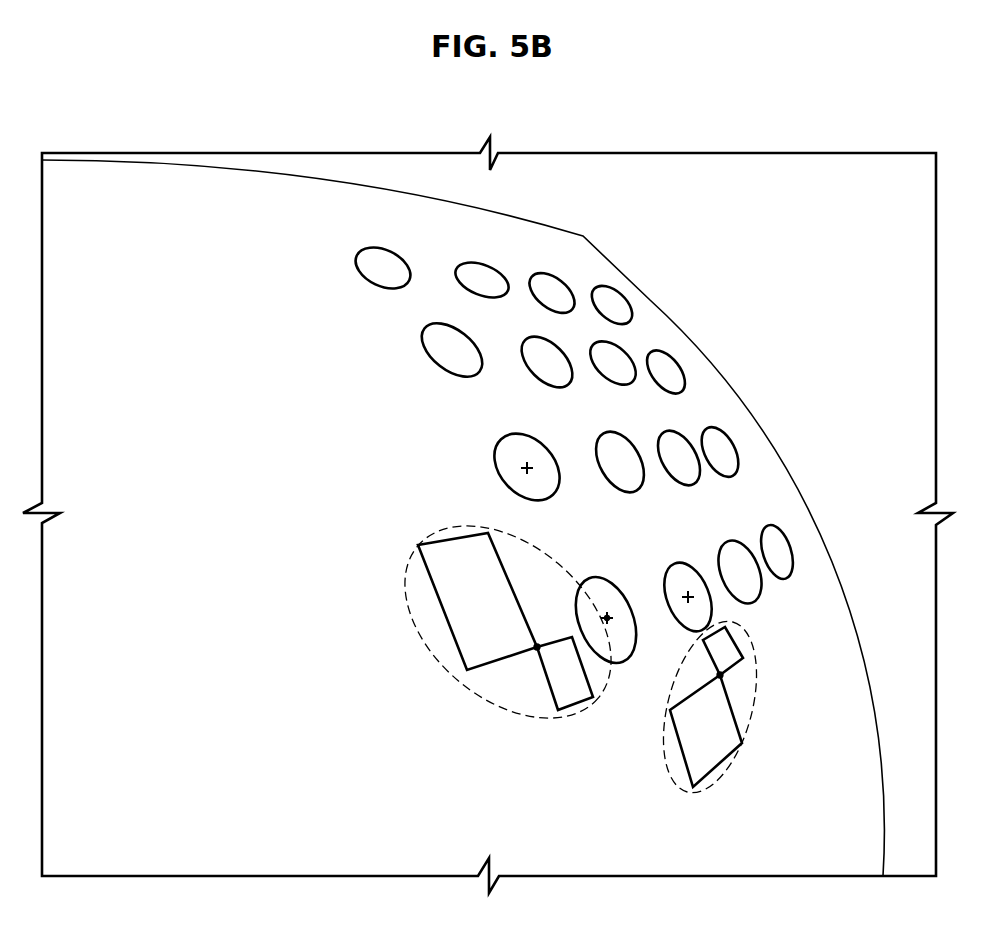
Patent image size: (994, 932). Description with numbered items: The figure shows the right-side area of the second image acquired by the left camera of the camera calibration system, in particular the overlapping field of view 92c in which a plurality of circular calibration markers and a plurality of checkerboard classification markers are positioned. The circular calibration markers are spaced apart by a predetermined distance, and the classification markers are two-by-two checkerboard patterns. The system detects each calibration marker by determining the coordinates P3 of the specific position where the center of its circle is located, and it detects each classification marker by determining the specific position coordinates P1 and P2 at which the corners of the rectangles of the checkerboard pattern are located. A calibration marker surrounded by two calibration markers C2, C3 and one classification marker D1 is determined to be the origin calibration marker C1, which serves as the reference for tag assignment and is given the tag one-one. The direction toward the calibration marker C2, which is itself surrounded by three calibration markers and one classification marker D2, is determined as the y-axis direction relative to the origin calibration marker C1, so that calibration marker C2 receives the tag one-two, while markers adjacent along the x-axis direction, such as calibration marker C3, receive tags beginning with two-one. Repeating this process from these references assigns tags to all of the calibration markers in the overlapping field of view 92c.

The overlapping field of view 92c is at (585, 167).
The calibration marker C3 is at (502, 437).
The origin calibration marker C1 is at (593, 578).
The calibration marker C2 is at (677, 563).
The coordinates of specific position P3 is at (607, 618).
The classification marker D1 is at (508, 609).
The specific position coordinates P1 is at (537, 647).
The classification marker D2 is at (744, 707).
The specific position coordinates P2 is at (720, 675).